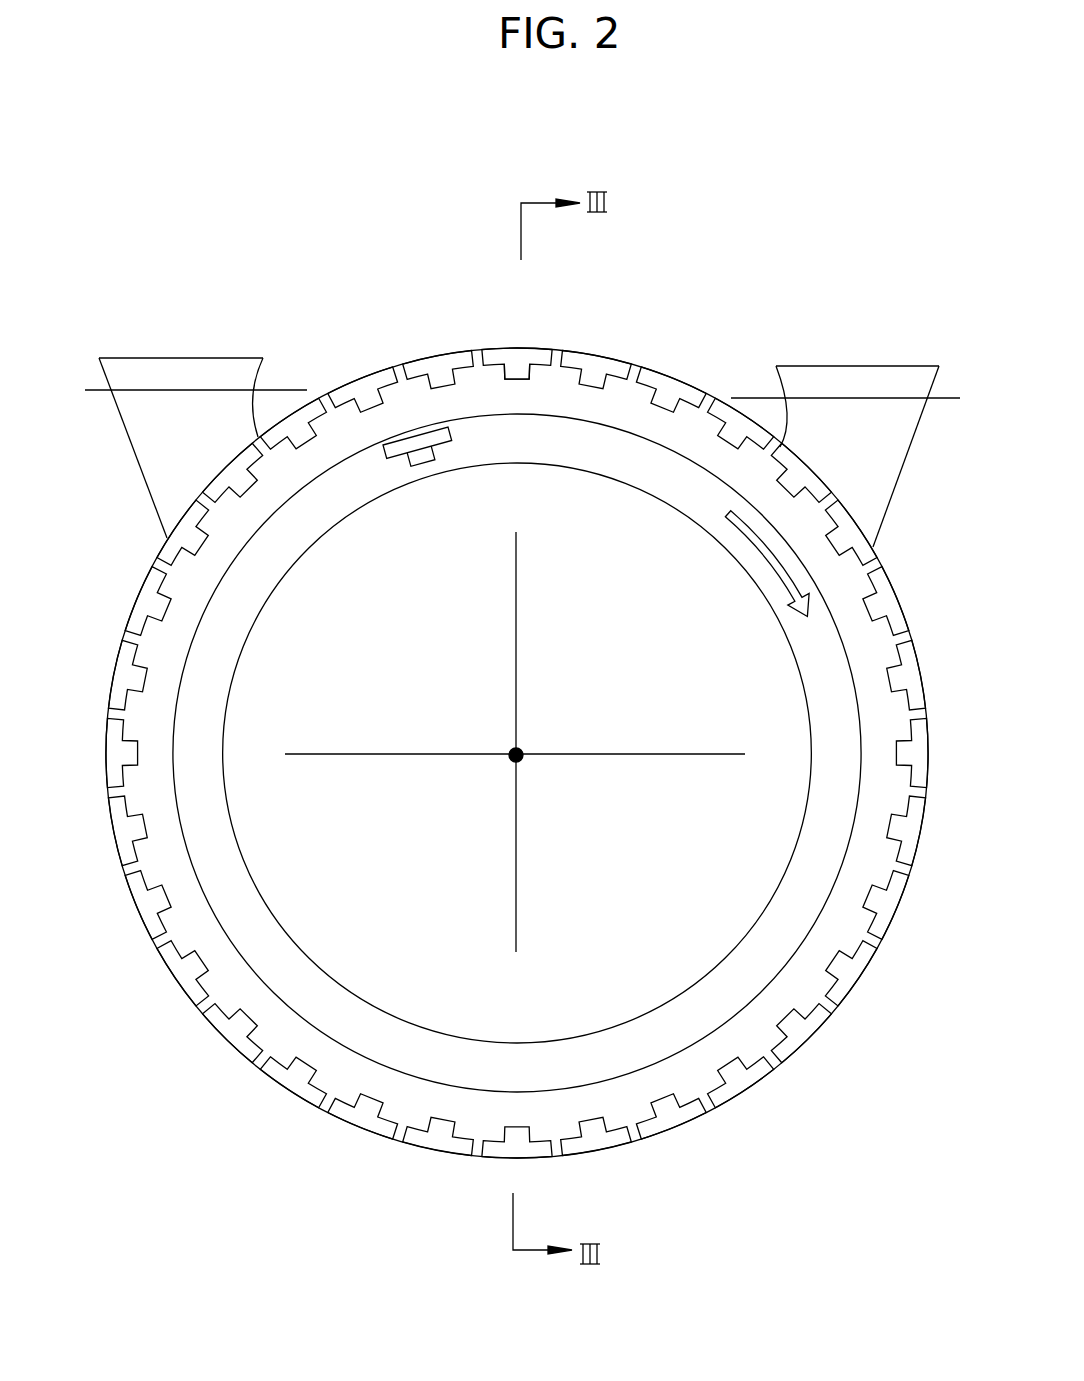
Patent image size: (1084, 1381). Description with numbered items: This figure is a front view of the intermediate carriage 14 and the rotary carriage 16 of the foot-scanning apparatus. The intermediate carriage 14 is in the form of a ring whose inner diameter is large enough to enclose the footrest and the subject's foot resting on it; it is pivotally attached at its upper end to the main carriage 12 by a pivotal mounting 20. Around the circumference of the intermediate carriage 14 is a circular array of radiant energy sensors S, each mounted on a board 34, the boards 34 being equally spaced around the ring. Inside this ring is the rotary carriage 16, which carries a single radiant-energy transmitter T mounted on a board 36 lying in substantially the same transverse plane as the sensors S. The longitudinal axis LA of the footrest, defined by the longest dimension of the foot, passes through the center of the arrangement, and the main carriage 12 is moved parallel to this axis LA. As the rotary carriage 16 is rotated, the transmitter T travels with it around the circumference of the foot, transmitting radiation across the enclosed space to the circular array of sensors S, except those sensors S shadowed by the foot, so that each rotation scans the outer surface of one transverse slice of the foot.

The main carriage 12 is at (835, 365).
The intermediate carriage 14 is at (482, 398).
The rotary carriage 16 is at (710, 483).
The pivotal mounting 20 is at (167, 392).
The boards 34 is at (540, 362).
The board 36 is at (417, 427).
The radiant energy sensors S is at (513, 367).
The radiant-energy transmitter T is at (517, 732).
The longitudinal axis LA is at (518, 760).